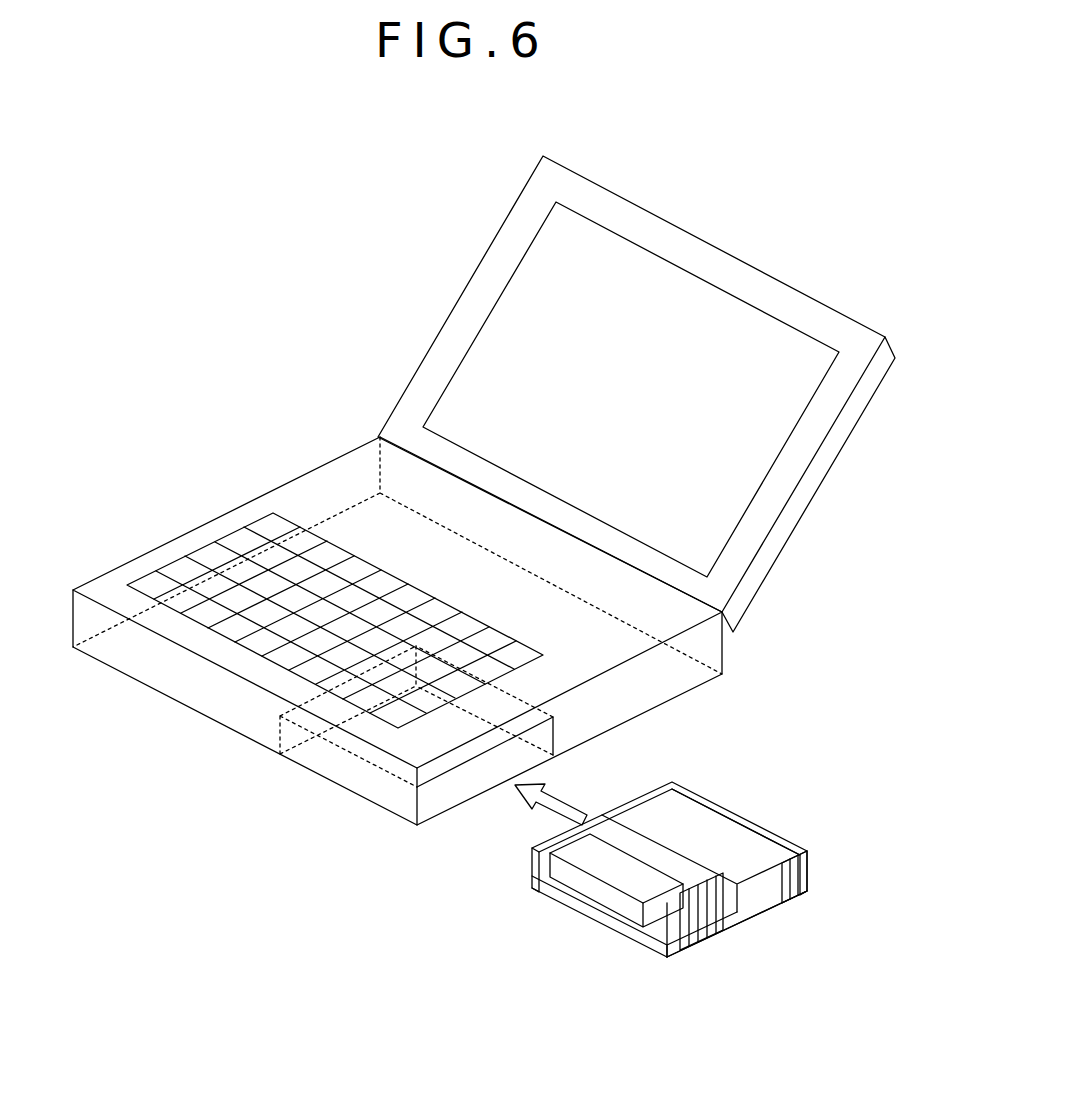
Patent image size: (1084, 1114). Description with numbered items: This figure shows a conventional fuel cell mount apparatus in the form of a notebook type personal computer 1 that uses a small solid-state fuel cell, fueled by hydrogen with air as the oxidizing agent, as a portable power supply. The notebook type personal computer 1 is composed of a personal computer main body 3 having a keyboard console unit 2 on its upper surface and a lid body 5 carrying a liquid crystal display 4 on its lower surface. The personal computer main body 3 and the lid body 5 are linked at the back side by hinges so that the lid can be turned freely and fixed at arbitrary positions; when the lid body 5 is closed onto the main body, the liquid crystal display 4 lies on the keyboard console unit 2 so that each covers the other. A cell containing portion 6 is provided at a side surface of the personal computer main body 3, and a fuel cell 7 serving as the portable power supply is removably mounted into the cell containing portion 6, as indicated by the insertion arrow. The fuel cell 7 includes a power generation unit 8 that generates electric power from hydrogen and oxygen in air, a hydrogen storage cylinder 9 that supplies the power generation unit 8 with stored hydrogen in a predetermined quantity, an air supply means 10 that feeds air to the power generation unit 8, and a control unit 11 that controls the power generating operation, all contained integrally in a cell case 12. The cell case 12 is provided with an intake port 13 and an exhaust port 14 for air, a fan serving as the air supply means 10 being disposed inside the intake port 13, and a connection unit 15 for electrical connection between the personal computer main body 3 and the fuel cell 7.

The notebook type personal computer 1 is at (337, 287).
The keyboard console unit 2 is at (205, 560).
The personal computer main body 3 is at (303, 490).
The liquid crystal display 4 is at (757, 445).
The lid body 5 is at (696, 243).
The cell containing portion 6 is at (447, 805).
The fuel cell 7 is at (767, 807).
The power generation unit 8 is at (575, 912).
The hydrogen storage cylinder 9 is at (728, 825).
The air supply means 10 is at (667, 960).
The control unit 11 is at (525, 878).
The cell case 12 is at (775, 832).
The intake port 13 is at (700, 935).
The exhaust port 14 is at (805, 876).
The connection unit 15 is at (637, 790).